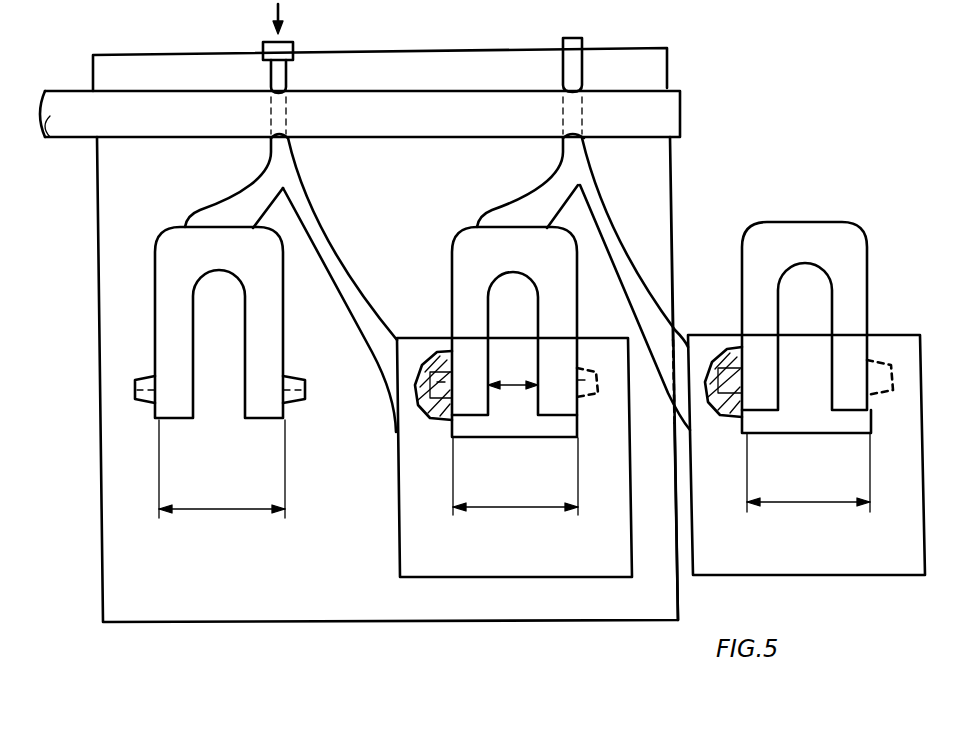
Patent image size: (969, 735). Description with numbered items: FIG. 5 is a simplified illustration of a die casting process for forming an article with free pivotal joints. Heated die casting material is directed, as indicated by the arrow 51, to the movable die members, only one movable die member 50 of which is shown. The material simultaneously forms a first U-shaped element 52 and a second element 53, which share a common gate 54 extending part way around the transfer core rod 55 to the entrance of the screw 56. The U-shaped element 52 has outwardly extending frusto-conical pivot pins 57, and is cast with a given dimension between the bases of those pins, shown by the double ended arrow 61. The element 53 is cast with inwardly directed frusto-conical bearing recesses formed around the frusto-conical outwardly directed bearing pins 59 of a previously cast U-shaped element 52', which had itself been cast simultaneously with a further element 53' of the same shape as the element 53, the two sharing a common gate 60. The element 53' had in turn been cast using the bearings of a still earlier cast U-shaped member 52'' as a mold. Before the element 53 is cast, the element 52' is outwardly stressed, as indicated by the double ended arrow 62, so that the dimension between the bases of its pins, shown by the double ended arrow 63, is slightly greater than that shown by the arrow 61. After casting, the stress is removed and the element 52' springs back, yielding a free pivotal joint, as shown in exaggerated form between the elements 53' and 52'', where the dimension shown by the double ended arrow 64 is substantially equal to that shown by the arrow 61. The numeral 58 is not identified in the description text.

The movable die member 50 is at (152, 608).
The arrow 51 is at (270, 14).
The first U-shaped element 52 is at (207, 278).
The previously cast U-shaped element 52' is at (498, 287).
The still earlier cast U-shaped member 52'' is at (799, 314).
The second element 53 is at (489, 466).
The further element 53' is at (806, 478).
The common gate 54 is at (318, 247).
The transfer core rod 55 is at (70, 98).
The screw 56 is at (292, 42).
The frusto-conical pivot pins 57 is at (133, 389).
The caps 58 is at (435, 350).
The bearing pins 59 is at (585, 380).
The common gate 60 is at (620, 245).
The double ended arrow 61 is at (208, 507).
The double ended arrow 62 is at (515, 388).
The double ended arrow 63 is at (505, 503).
The double ended arrow 64 is at (798, 498).